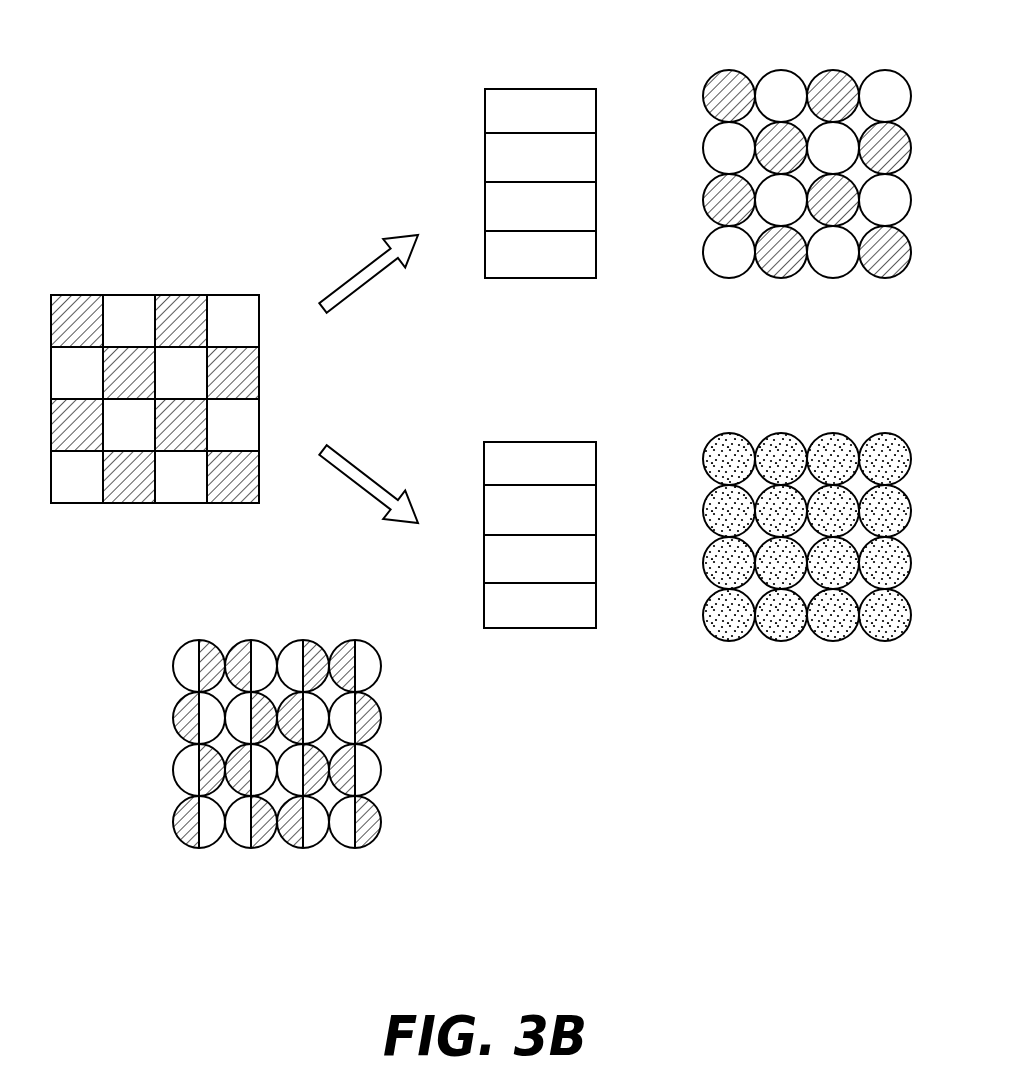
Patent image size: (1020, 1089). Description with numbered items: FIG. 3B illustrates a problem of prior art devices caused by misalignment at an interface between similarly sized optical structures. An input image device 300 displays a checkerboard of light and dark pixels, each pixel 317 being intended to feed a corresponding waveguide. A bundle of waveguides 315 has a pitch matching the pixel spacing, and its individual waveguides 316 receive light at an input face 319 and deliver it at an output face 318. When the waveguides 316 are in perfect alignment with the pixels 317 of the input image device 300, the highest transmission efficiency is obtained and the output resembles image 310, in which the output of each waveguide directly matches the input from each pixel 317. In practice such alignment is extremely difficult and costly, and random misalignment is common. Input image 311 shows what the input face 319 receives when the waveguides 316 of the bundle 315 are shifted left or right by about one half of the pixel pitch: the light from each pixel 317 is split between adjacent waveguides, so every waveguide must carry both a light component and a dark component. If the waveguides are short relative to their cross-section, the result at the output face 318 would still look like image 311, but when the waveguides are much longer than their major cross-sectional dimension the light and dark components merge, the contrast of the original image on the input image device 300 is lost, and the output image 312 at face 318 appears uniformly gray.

The input image device 300 is at (96, 295).
The pixel 317 is at (234, 306).
The waveguides 316 is at (495, 210).
The bundle of waveguides 315 is at (500, 280).
The output face 318 is at (597, 460).
The input face 319 is at (483, 601).
The image 310 is at (778, 70).
The input image 311 is at (250, 641).
The output image 312 is at (742, 641).